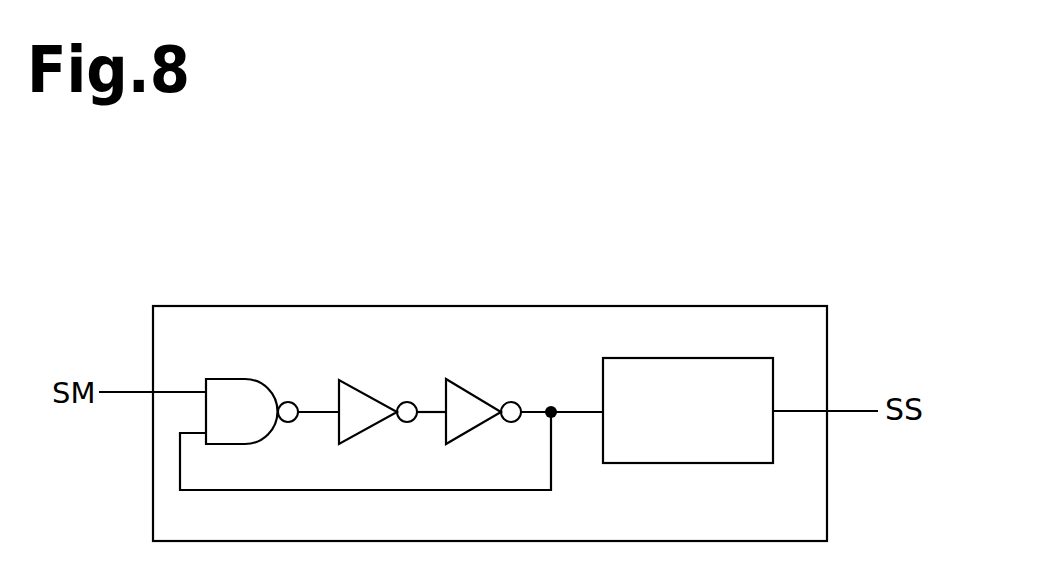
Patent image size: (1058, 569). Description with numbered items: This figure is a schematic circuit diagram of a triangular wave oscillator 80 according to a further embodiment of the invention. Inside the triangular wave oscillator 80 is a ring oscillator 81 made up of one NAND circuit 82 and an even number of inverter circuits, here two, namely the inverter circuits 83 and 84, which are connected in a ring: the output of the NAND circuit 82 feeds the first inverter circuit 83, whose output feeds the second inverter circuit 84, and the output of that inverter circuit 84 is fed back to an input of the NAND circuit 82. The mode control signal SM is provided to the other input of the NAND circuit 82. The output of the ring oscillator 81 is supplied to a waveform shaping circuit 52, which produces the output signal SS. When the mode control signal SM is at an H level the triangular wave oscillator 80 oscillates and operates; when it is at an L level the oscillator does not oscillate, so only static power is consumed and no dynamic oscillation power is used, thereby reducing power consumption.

The triangular wave oscillator 80 is at (797, 306).
The ring oscillator 81 is at (391, 403).
The NAND circuit 82 is at (220, 378).
The inverter circuit 83 is at (380, 402).
The inverter circuit 84 is at (487, 403).
The waveform shaping circuit 52 is at (715, 358).